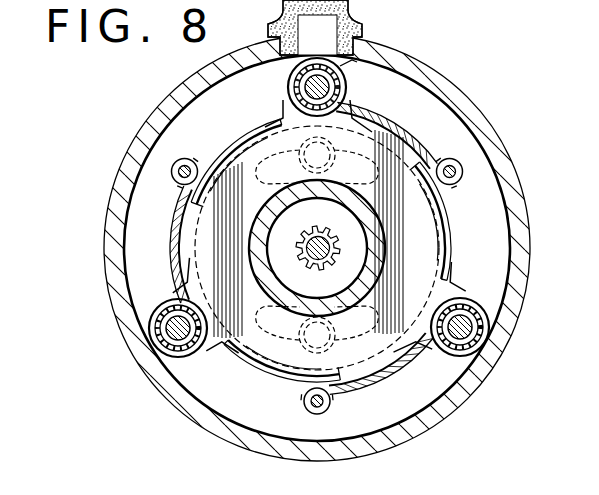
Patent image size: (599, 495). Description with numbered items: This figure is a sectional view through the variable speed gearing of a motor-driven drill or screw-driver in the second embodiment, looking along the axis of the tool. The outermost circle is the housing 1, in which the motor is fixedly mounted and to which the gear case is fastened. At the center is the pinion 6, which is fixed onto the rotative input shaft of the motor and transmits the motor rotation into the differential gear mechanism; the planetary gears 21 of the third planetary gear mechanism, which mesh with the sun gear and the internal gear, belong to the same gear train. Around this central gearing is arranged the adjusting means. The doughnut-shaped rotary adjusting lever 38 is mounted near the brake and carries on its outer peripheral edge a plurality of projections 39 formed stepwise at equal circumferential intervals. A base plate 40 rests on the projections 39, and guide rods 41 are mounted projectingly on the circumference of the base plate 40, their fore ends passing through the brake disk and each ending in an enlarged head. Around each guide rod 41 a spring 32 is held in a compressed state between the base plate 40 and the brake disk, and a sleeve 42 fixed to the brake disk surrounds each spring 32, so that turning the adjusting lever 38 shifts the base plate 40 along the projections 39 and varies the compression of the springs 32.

The housing 1 is at (522, 173).
The pinion 6 is at (306, 240).
The planetary gears 21 is at (336, 249).
The spring 32 is at (283, 98).
The rotary adjusting lever 38 is at (342, 64).
The projections 39 is at (216, 158).
The base plate 40 is at (176, 222).
The guide rods 41 is at (341, 88).
The sleeve 42 is at (289, 80).